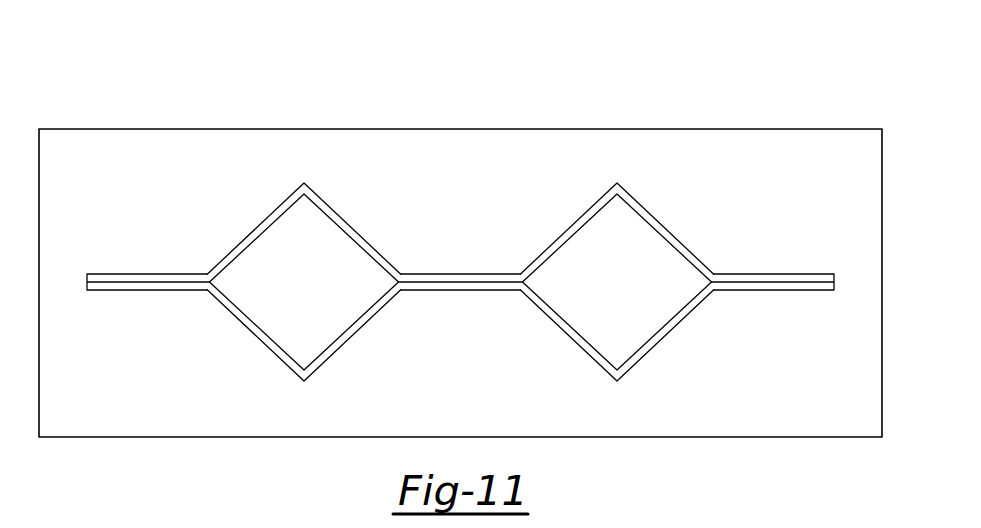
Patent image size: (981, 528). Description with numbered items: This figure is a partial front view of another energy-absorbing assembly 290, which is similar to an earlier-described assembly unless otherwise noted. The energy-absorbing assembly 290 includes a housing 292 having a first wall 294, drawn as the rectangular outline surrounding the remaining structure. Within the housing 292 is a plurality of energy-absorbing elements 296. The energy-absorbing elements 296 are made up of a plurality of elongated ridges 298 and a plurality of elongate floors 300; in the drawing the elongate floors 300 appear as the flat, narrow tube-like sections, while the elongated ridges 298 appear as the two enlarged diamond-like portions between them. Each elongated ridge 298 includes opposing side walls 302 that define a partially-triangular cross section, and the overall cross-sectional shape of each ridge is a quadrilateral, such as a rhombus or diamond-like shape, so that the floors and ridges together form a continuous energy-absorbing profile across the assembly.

The energy-absorbing assembly 290 is at (814, 77).
The housing 292 is at (885, 191).
The first wall 294 is at (797, 145).
The energy-absorbing element 296 is at (788, 274).
The elongated ridge 298 is at (334, 204).
The elongate floor 300 is at (118, 274).
The side wall 302 is at (250, 234).